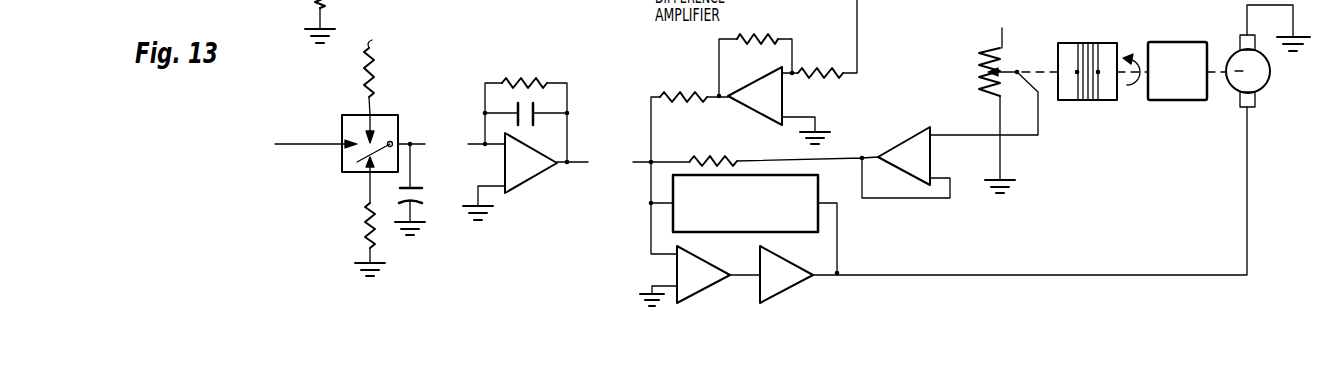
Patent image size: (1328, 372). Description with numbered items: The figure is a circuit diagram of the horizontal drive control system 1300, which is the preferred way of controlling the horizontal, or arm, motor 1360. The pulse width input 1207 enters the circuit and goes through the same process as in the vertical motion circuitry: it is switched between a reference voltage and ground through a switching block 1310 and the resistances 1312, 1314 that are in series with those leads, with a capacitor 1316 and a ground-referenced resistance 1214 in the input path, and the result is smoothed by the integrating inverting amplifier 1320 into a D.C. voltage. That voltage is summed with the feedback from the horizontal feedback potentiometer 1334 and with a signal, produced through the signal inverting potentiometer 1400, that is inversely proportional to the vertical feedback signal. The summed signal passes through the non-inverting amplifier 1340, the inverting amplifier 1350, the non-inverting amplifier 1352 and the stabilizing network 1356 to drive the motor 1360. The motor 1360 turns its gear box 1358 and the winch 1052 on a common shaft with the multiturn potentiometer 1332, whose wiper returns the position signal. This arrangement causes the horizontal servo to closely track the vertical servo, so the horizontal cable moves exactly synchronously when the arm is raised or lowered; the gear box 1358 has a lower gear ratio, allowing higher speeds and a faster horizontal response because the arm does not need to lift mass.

The pulse width input 1207 is at (247, 147).
The resistor 1214 is at (332, 21).
The horizontal drive control system 1300 is at (495, 277).
The switch 1310 is at (353, 122).
The resistor 1312 is at (377, 78).
The resistor 1314 is at (366, 217).
The capacitor 1316 is at (424, 193).
The inverting amplifier 1320 is at (527, 176).
The multiturn potentiometer 1332 is at (1007, 140).
The horizontal feedback potentiometer 1334 is at (987, 50).
The non-inverting amplifier 1340 is at (890, 145).
The inverting amplifier 1350 is at (707, 283).
The non-inverting amplifier 1352 is at (792, 284).
The stabilizing network 1356 is at (813, 190).
The horizontal gear box 1358 is at (1173, 100).
The horizontal motor 1360 is at (1263, 78).
The signal inverting potentiometer 1400 is at (762, 108).
The winch 1052 is at (1083, 43).